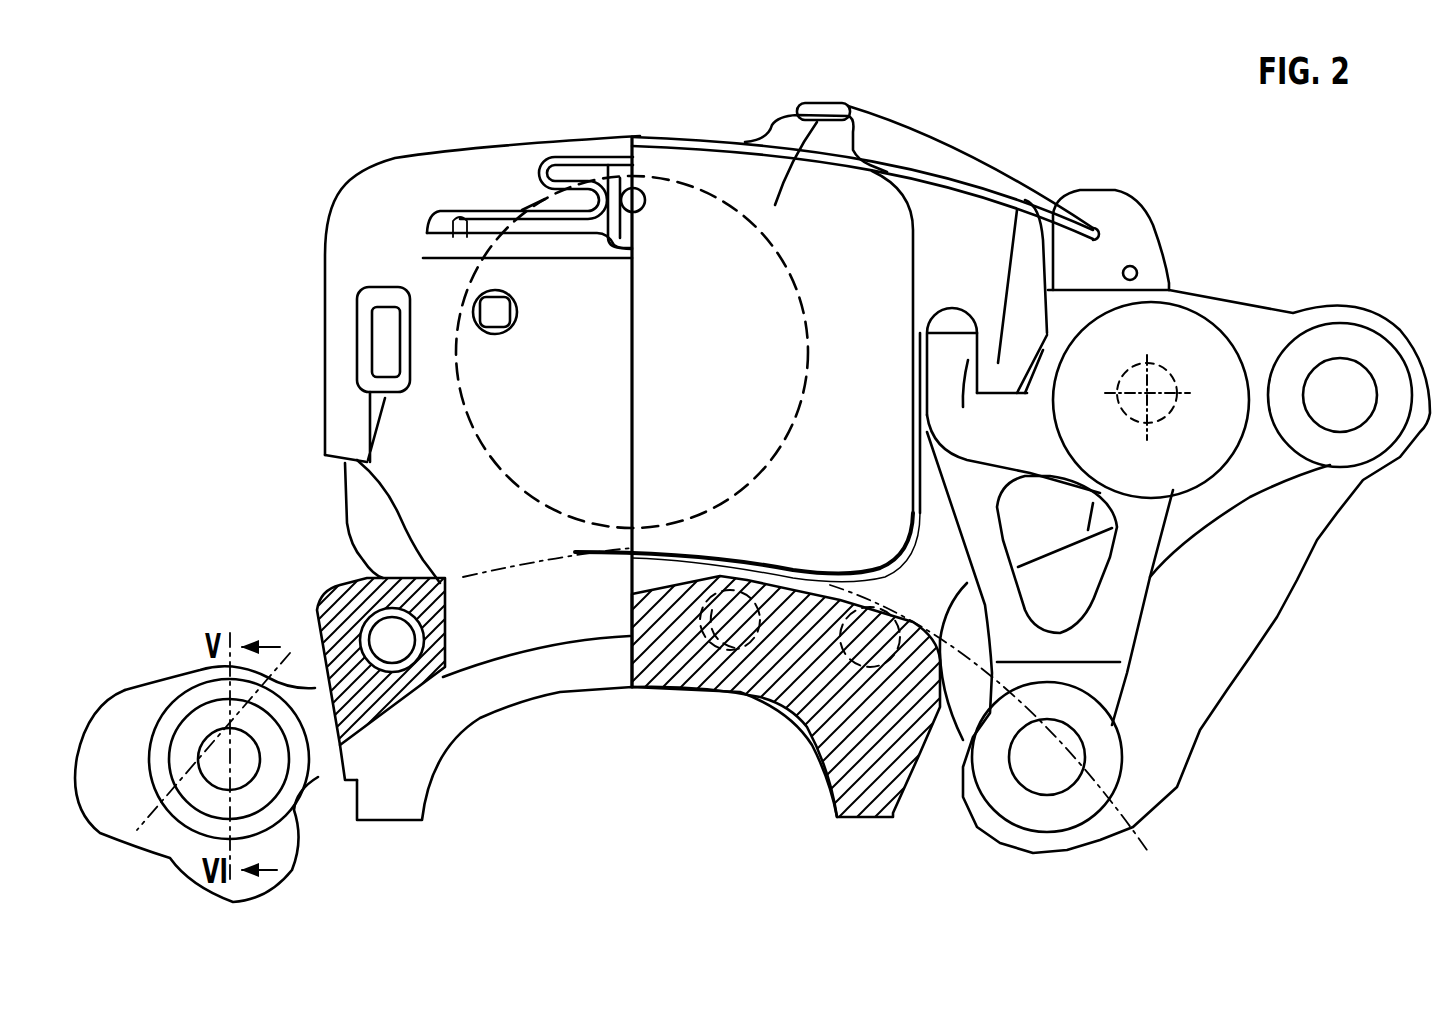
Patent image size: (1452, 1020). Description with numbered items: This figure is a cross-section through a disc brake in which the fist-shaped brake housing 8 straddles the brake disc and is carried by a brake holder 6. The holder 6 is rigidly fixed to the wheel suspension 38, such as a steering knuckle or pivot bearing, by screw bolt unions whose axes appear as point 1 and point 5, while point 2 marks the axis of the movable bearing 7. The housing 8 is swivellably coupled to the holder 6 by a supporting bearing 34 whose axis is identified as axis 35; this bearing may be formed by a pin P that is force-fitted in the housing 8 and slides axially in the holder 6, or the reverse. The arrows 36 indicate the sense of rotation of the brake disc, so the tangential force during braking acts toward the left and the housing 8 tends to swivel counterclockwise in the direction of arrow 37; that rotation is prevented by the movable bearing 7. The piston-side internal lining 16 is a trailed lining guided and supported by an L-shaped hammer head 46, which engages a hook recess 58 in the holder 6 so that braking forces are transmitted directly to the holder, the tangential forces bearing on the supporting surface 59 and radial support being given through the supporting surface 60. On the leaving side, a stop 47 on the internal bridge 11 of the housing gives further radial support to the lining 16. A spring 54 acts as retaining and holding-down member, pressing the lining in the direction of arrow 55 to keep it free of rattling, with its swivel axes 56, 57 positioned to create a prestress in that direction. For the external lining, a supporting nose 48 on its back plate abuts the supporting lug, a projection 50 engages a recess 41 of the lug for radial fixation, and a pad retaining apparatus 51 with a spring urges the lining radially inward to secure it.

The axis of wheel suspension element 1 is at (1337, 393).
The axis of movable bearing element 2 is at (223, 747).
The axis of wheel suspension element 5 is at (1047, 755).
The brake holder 6 is at (1170, 560).
The movable bearing 7 is at (180, 827).
The brake housing 8 is at (912, 782).
The internal bridge 11 is at (620, 673).
The internal brake lining 16 is at (843, 247).
The supporting bearing 34 is at (1173, 347).
The axis of supporting bearing 35 is at (1152, 392).
The arrows indicating sense of rotation of brake disc 36 is at (108, 494).
The arrow indicating swiveling direction 37 is at (247, 627).
The wheel suspension 38 is at (127, 690).
The recesses 41 is at (483, 317).
The L-shaped hammer head 46 is at (1017, 210).
The stop 47 is at (443, 603).
The supporting nose 48 is at (390, 352).
The projection 50 is at (490, 308).
The pad retaining apparatus 51 is at (583, 155).
The spring 54 is at (990, 165).
The arrow indicating spring pressing direction 55 is at (775, 228).
The swivel axis of retaining spring 56 is at (1127, 193).
The swivel axis of retaining spring 57 is at (1133, 267).
The hook recess 58 is at (1060, 357).
The supporting surface 59 is at (952, 376).
The supporting surface 60 is at (997, 395).
The pin P is at (1165, 385).